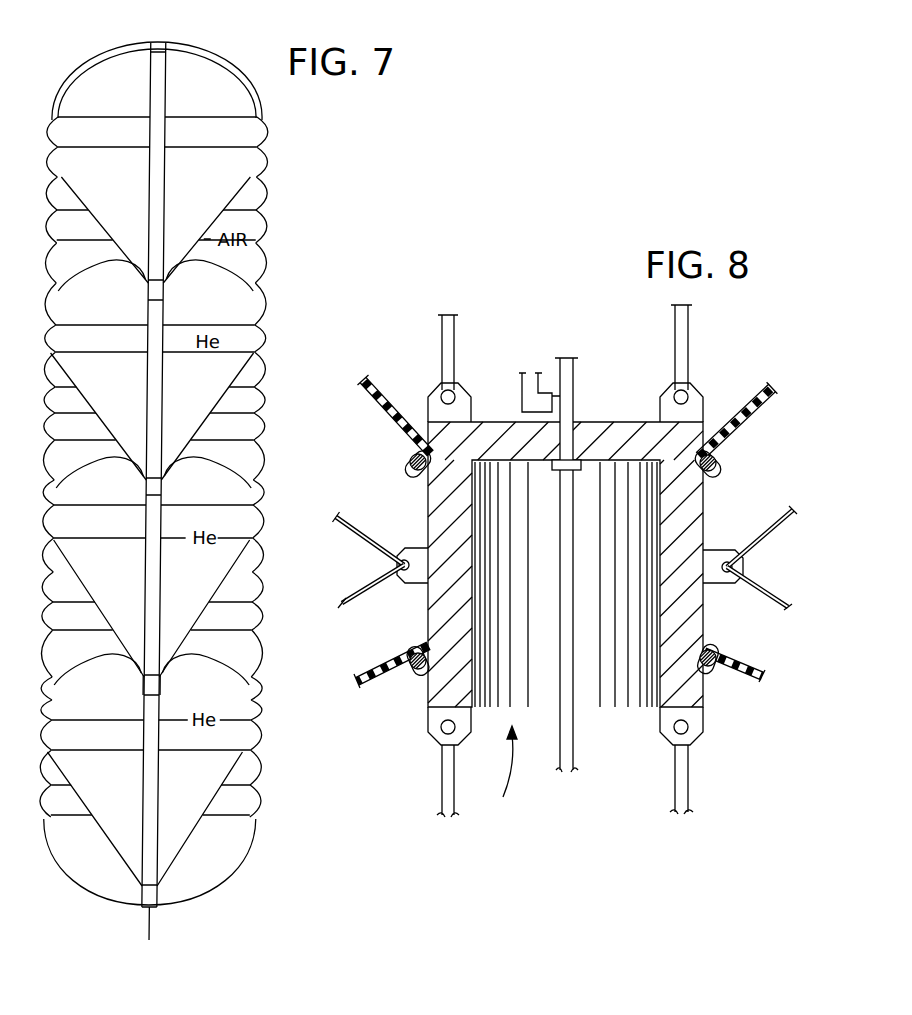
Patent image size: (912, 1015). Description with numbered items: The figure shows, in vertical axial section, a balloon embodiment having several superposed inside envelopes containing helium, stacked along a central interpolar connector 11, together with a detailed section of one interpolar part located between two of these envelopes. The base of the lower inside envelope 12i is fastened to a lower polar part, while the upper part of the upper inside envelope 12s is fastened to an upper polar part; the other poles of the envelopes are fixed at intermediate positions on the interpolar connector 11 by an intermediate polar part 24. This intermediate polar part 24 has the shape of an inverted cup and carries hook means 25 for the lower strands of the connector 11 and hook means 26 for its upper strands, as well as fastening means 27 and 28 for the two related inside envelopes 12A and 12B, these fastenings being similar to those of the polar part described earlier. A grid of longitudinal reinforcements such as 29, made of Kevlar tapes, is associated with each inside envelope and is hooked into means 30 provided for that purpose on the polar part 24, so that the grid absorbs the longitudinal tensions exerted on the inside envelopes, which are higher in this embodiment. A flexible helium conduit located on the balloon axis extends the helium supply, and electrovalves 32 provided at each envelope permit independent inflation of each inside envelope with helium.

In FIG. 7, the interpolar connector 11 is at (166, 620).
In FIG. 8, the interpolar connector 11 is at (678, 336).
In FIG. 7, the upper inside envelope 12s is at (92, 212).
In FIG. 7, the inside envelope 12B is at (104, 417).
In FIG. 8, the inside envelope 12B is at (742, 410).
In FIG. 7, the inside envelope 12A is at (97, 602).
In FIG. 8, the inside envelope 12A is at (748, 664).
In FIG. 7, the lower inside envelope 12i is at (113, 836).
In FIG. 7, the intermediate polar part 24 is at (148, 688).
In FIG. 8, the intermediate polar part 24 is at (497, 771).
In FIG. 8, the hook means 25 is at (660, 730).
In FIG. 8, the hook means 26 is at (668, 402).
In FIG. 8, the fastening means 27 is at (716, 673).
In FIG. 8, the fastening means 28 is at (720, 463).
In FIG. 8, the longitudinal reinforcement 29 is at (772, 596).
In FIG. 8, the hooking means 30 is at (717, 550).
In FIG. 8, the electrovalve 32 is at (556, 396).